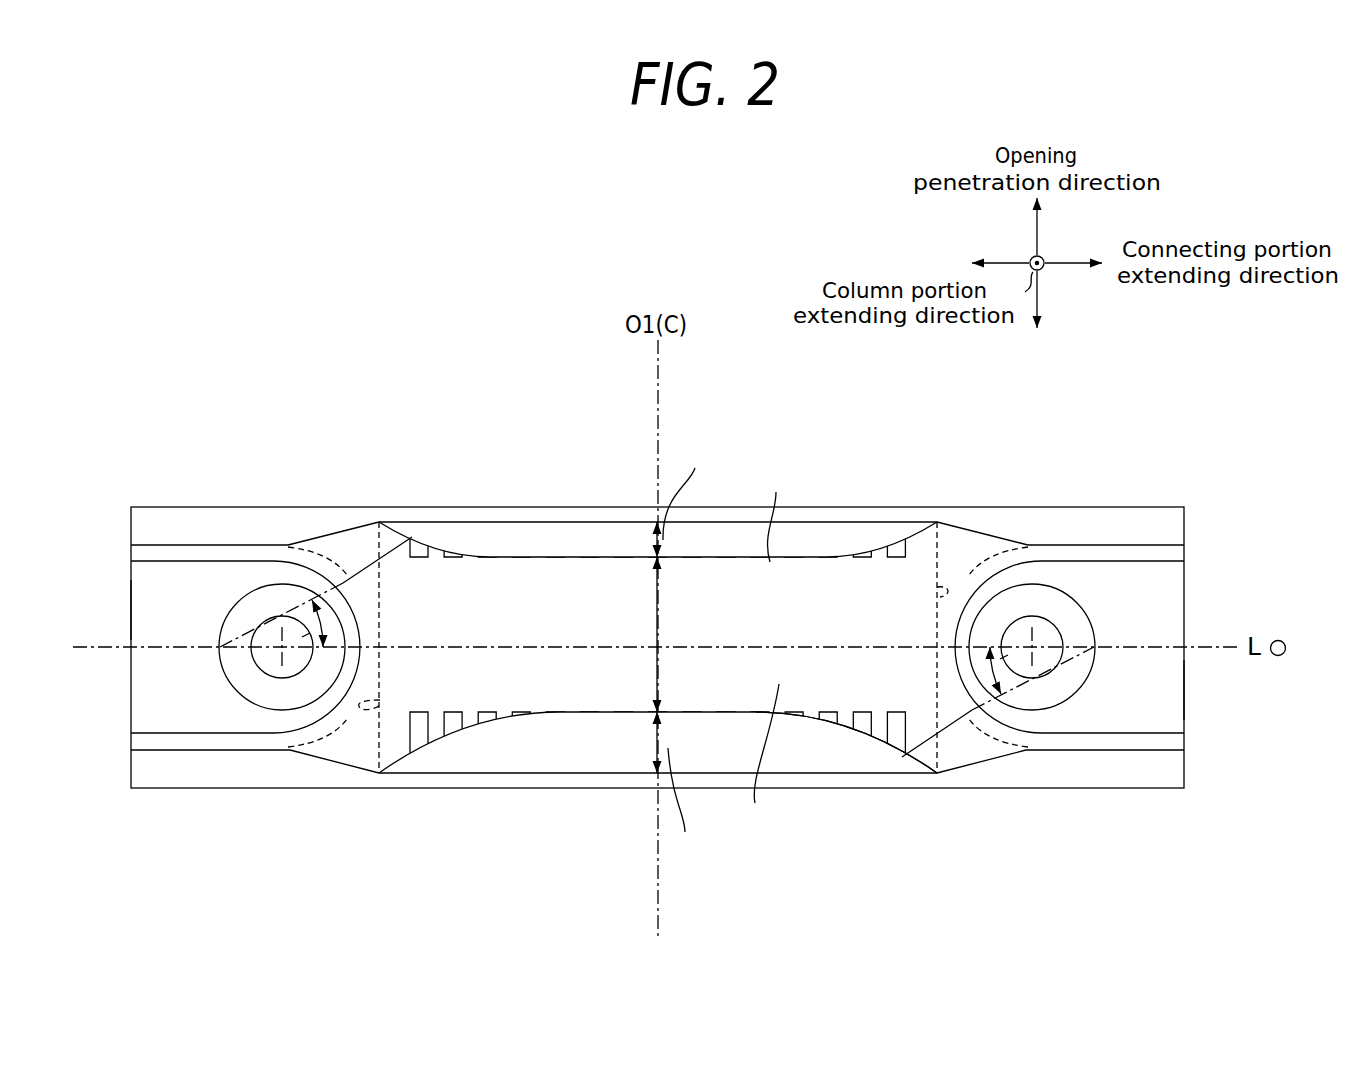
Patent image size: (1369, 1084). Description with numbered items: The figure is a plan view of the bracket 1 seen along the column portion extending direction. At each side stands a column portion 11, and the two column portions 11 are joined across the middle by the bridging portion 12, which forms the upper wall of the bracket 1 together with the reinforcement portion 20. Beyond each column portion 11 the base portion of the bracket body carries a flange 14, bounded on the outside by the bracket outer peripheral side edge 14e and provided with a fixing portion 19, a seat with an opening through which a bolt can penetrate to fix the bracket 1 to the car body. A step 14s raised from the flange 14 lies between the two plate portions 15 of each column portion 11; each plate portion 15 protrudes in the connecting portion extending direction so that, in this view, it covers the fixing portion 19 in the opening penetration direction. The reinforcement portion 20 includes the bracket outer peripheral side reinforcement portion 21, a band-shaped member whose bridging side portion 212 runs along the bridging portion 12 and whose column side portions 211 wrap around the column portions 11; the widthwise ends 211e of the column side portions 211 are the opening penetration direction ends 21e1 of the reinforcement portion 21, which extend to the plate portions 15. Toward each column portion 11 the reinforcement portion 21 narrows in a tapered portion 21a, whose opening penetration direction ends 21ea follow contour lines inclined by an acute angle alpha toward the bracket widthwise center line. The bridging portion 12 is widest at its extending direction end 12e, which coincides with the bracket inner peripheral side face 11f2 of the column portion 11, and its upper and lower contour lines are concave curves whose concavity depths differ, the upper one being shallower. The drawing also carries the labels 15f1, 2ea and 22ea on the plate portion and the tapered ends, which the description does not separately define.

The bracket 1 is at (493, 422).
The column portion 11 is at (658, 711).
The bridging portion 12 is at (637, 733).
The flange 14 is at (232, 521).
The bracket outer peripheral side edge 14e is at (131, 611).
The step 14s is at (157, 682).
The plate portion 15 is at (179, 541).
The rib flat surface 15f1 is at (203, 545).
The fixing portion 19 is at (233, 660).
The reinforcement portion 20 is at (600, 600).
The bracket outer peripheral side reinforcement portion 21 is at (677, 647).
The tapered portion 21a is at (390, 607).
The opening penetration direction end 21e1 is at (677, 629).
The opening penetration direction end 21ea is at (365, 572).
The column side portion 211 is at (340, 677).
The widthwise end 211e is at (288, 547).
The bridging side portion 212 is at (822, 722).
The second arc end 22ea is at (955, 708).
The arc end 2ea is at (386, 742).
The bracket inner peripheral side face 11f2 is at (380, 667).
The extending direction end 12e is at (380, 700).